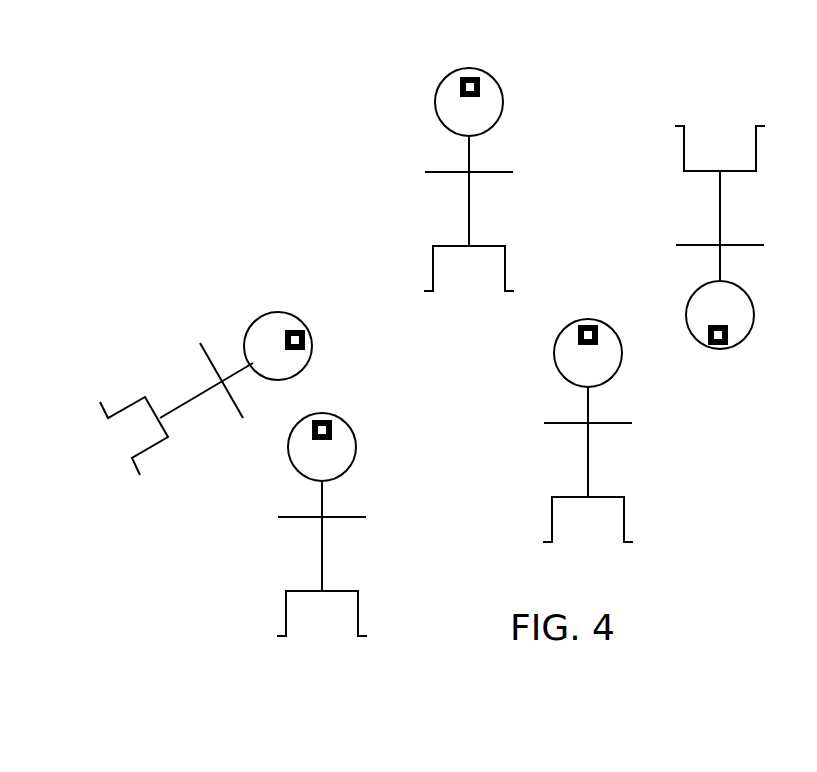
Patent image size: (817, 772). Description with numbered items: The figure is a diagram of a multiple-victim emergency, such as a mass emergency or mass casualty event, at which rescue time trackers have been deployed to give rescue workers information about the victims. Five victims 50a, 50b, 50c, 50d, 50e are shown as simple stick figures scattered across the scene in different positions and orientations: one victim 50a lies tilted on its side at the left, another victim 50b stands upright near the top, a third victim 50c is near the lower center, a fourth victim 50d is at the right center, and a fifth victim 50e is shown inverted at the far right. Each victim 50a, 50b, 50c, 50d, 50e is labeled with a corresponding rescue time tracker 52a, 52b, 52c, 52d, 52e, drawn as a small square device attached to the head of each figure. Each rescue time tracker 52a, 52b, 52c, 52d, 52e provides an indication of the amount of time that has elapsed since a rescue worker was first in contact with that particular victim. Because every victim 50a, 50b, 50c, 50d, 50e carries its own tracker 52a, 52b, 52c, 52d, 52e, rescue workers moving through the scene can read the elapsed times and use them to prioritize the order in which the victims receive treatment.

The victim 50a is at (263, 316).
The victim 50b is at (498, 109).
The victim 50c is at (356, 452).
The victim 50d is at (621, 345).
The victim 50e is at (743, 283).
The rescue time tracker 52a is at (310, 339).
The rescue time tracker 52b is at (484, 73).
The rescue time tracker 52c is at (328, 412).
The rescue time tracker 52d is at (595, 320).
The rescue time tracker 52e is at (718, 353).